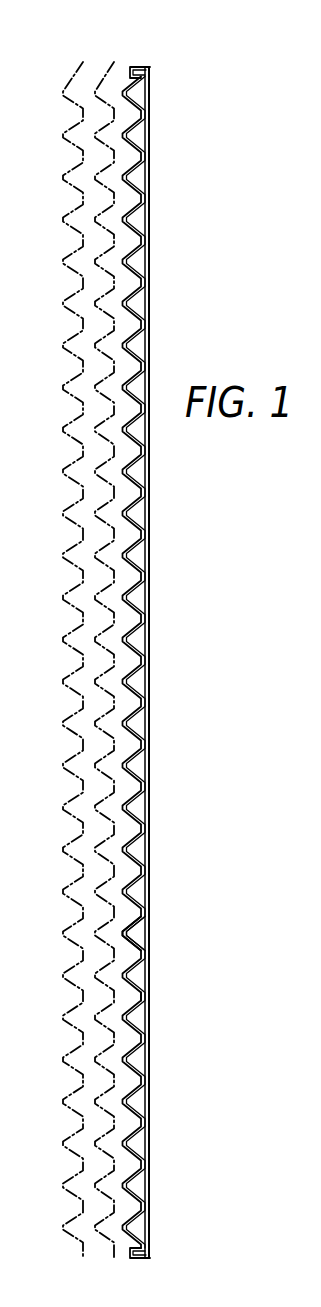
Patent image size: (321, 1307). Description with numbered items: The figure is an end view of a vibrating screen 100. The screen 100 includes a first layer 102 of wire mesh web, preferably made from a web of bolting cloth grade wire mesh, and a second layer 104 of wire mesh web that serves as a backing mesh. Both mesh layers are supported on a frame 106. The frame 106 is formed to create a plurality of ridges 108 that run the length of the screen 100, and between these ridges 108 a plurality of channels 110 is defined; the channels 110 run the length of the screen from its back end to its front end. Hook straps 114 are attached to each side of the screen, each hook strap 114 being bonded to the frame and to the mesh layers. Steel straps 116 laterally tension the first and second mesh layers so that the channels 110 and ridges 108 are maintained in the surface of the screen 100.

The vibrating screen 100 is at (138, 607).
The first layer of wire mesh web 102 is at (113, 70).
The second layer of wire mesh web 104 is at (82, 62).
The frame 106 is at (178, 310).
The ridges 108 is at (127, 930).
The channels 110 is at (145, 995).
The hook straps 114 is at (140, 62).
The steel straps 116 is at (150, 1102).